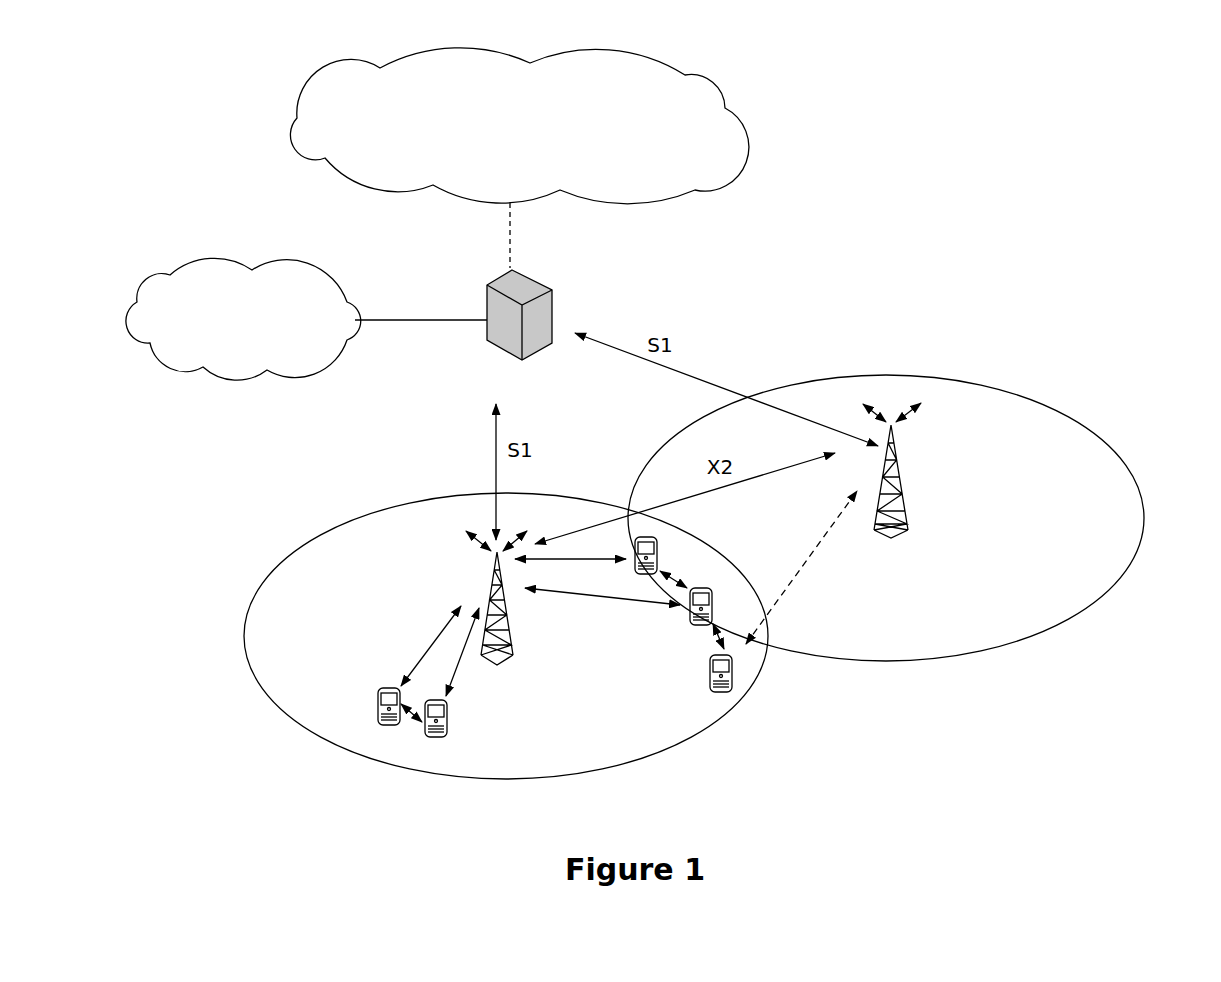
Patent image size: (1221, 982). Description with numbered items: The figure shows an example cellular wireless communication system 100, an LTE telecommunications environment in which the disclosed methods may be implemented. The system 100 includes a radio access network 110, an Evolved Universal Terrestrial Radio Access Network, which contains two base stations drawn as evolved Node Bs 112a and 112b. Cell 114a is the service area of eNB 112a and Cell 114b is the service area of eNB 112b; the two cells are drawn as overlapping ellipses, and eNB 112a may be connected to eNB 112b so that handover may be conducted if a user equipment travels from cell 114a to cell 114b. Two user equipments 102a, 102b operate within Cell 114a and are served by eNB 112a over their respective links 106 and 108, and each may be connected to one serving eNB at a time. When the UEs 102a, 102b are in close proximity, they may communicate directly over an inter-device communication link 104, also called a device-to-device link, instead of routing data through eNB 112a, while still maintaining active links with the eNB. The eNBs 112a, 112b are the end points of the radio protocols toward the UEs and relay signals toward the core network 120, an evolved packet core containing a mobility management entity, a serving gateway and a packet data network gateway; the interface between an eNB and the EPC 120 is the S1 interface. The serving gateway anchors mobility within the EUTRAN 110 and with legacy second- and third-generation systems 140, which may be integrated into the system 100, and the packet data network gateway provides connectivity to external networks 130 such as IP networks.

The cellular wireless communication system 100 is at (978, 106).
The user equipment 102a is at (378, 692).
The user equipment 102b is at (447, 717).
The inter-device communication link 104 is at (410, 716).
The link with the eNB 106 is at (432, 632).
The link with the eNB 108 is at (457, 677).
The radio access network 110 is at (362, 512).
The evolved Node B 112a is at (490, 583).
The evolved Node B 112b is at (898, 465).
The cell 114a is at (300, 708).
The cell 114b is at (1106, 585).
The core network 120 is at (552, 300).
The external networks 130 is at (420, 49).
The 2G/3G systems 140 is at (167, 275).